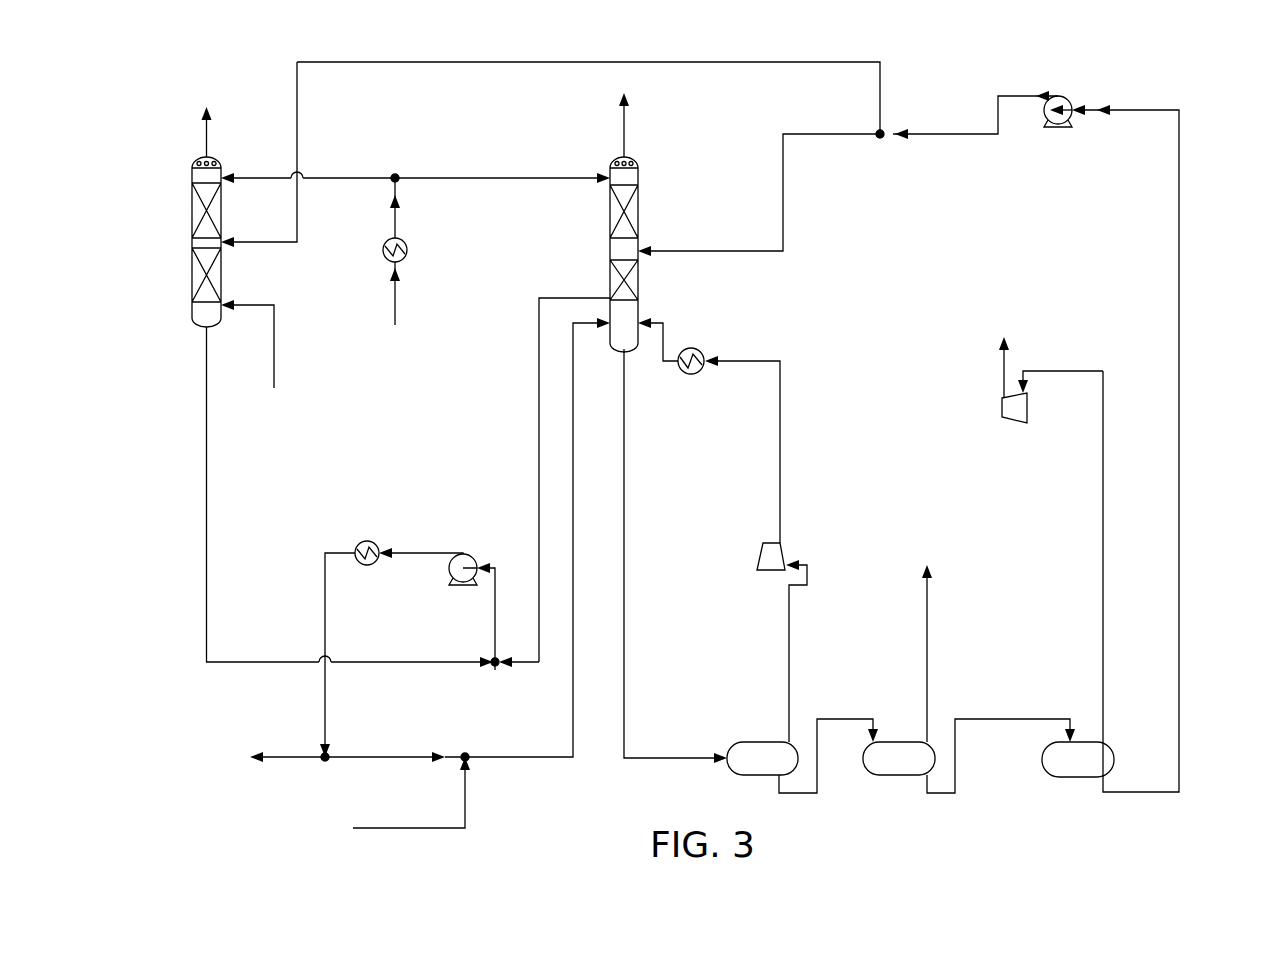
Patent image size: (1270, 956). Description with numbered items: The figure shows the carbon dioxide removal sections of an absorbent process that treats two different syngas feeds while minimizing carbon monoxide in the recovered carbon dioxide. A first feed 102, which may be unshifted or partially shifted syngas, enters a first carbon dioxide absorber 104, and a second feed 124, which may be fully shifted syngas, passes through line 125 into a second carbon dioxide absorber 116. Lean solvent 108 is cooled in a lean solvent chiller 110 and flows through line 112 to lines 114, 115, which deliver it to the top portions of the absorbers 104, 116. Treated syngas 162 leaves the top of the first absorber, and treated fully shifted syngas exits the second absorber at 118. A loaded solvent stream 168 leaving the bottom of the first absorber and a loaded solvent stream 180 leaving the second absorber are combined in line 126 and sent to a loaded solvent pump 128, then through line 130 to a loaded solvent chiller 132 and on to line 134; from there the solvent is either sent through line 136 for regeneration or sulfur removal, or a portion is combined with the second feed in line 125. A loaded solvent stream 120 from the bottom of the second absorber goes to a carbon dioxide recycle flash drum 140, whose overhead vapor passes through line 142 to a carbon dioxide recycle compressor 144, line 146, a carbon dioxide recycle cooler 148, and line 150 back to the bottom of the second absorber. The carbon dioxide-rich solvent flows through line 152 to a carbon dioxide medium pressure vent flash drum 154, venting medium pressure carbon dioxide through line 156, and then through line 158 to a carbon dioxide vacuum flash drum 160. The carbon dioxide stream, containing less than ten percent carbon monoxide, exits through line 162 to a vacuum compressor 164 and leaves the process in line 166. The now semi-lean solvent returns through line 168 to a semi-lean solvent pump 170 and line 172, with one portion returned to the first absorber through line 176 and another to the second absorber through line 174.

The first feed 102 is at (276, 348).
The first carbon dioxide absorber 104 is at (223, 277).
The lean solvent 108 is at (397, 297).
The lean solvent chiller 110 is at (409, 250).
The line 112 is at (397, 222).
The line 114 is at (352, 175).
The line 115 is at (452, 175).
The second carbon dioxide absorber 116 is at (640, 277).
The treated fully shifted syngas 118 is at (627, 133).
The loaded solvent stream 120 is at (626, 503).
The second feed 124 is at (404, 826).
The line 125 is at (575, 740).
The line 126 is at (499, 579).
The loaded solvent pump 128 is at (462, 586).
The line 130 is at (419, 551).
The loaded solvent chiller 132 is at (368, 541).
The line 134 is at (327, 690).
The line 136 is at (283, 752).
The carbon dioxide recycle flash drum 140 is at (750, 740).
The line 142 is at (791, 652).
The carbon dioxide recycle compressor 144 is at (758, 556).
The line 146 is at (782, 446).
The carbon dioxide recycle cooler 148 is at (691, 375).
The line 150 is at (666, 333).
The line 152 is at (820, 774).
The carbon dioxide medium pressure vent flash drum 154 is at (899, 740).
The line 156 is at (929, 643).
The line 158 is at (1012, 718).
The carbon dioxide vacuum flash drum 160 is at (1041, 756).
The line 162 is at (209, 134).
The vacuum compressor 164 is at (1000, 408).
The line 166 is at (1002, 367).
The loaded solvent stream 168 is at (205, 470).
The semi-lean solvent pump 170 is at (1063, 96).
The line 172 is at (972, 137).
The line 174 is at (785, 192).
The line 176 is at (882, 93).
The loaded solvent stream 180 is at (539, 430).